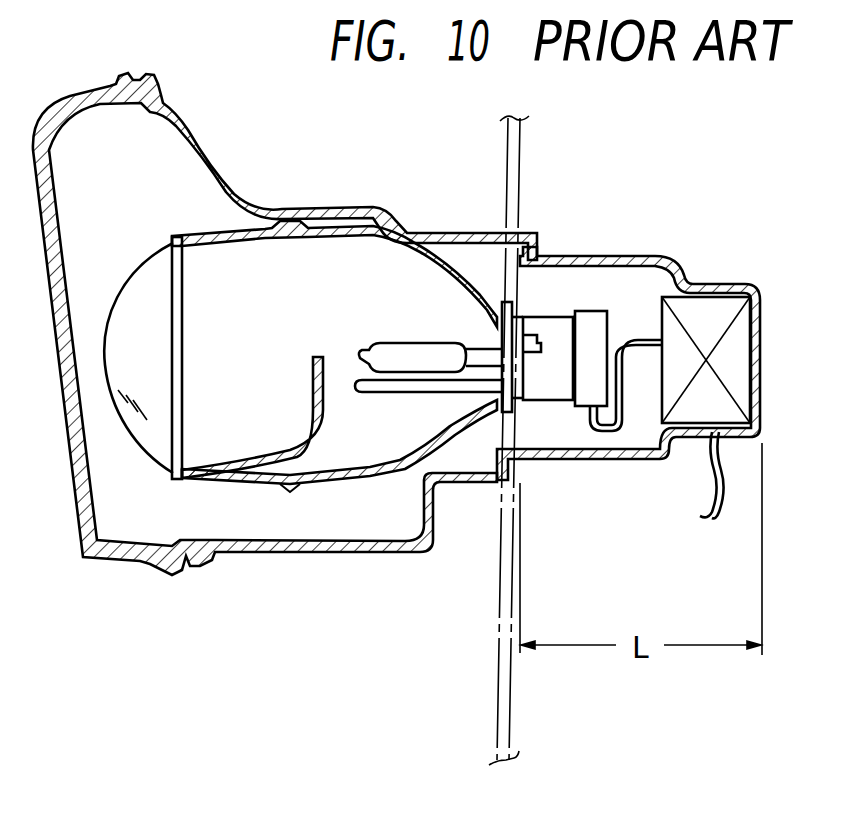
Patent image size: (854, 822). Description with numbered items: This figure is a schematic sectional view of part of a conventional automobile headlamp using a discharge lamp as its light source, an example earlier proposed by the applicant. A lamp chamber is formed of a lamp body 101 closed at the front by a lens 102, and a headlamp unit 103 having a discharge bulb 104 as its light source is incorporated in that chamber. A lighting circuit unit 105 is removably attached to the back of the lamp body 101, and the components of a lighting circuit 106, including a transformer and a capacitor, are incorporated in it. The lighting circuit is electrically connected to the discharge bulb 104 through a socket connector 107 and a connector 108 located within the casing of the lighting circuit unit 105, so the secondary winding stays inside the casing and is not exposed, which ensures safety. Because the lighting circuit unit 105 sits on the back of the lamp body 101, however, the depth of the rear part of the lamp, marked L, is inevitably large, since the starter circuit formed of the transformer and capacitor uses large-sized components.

The lamp body 101 is at (452, 236).
The lens 102 is at (130, 567).
The headlamp unit 103 is at (340, 497).
The discharge bulb 104 is at (422, 352).
The lighting circuit unit 105 is at (609, 256).
The lighting circuit 106 is at (693, 410).
The socket connector 107 is at (520, 368).
The connector 108 is at (554, 381).